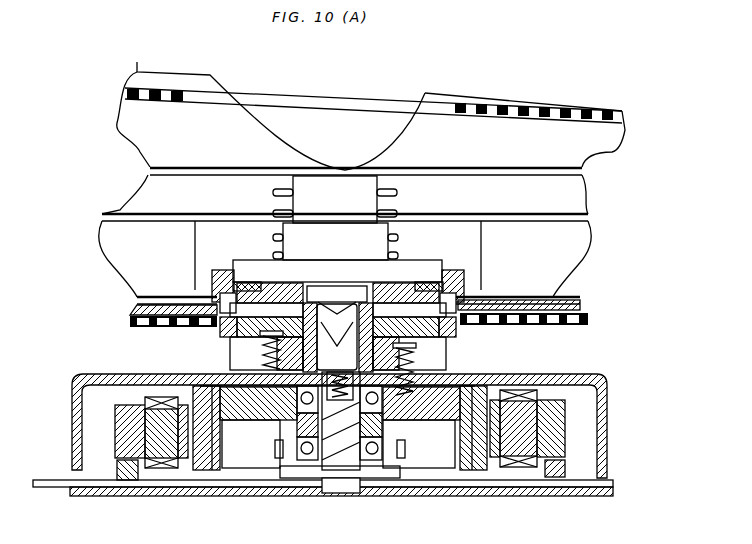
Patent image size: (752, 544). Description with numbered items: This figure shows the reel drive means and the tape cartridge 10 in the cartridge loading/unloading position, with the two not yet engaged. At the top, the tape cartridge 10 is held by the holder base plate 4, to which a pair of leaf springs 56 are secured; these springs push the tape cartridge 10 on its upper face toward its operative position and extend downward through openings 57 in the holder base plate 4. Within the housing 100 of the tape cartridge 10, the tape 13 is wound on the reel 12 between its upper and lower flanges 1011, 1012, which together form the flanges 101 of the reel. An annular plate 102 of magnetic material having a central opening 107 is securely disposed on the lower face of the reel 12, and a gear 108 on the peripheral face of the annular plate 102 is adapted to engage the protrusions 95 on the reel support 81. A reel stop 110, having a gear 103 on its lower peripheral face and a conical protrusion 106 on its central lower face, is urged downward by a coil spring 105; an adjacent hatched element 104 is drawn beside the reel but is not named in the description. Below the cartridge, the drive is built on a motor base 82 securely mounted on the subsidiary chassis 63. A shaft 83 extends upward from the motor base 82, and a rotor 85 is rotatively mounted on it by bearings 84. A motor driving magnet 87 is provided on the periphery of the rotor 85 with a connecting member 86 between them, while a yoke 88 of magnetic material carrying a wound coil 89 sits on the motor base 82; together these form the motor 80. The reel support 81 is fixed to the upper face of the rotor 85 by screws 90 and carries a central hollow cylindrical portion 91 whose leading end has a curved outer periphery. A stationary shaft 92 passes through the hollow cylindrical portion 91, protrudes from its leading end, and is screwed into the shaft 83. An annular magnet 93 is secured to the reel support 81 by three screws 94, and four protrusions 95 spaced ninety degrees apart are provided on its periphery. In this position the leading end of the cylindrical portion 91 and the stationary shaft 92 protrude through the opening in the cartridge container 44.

The holder base plate 4 is at (173, 102).
The tape cartridge 10 is at (527, 195).
The reel 12 is at (193, 232).
The tape 13 is at (175, 273).
The cartridge container 44 is at (150, 330).
The leaf spring 56 is at (442, 93).
The opening 57 is at (310, 101).
The subsidiary chassis 63 is at (147, 490).
The motor housing 80 is at (610, 400).
The reel support 81 is at (457, 365).
The motor base 82 is at (347, 497).
The shaft 83 is at (347, 453).
The bearings 84 is at (307, 448).
The rotor 85 is at (253, 415).
The connecting member 86 is at (215, 470).
The motor driving magnet 87 is at (202, 468).
The yoke 88 is at (180, 450).
The coil 89 is at (143, 400).
The screws 90 is at (411, 368).
The hollow cylindrical portion 91 is at (337, 352).
The stationary shaft 92 is at (327, 303).
The annular magnet 93 is at (293, 352).
The screws 94 is at (232, 350).
The protrusions 95 is at (215, 328).
The housing 100 is at (480, 167).
The flanges 101 is at (341, 256).
The upper flange 1011 is at (117, 218).
The lower flange 1012 is at (137, 297).
The annular plate 102 is at (292, 278).
The gear 103 is at (247, 281).
The hatched block 104 is at (213, 272).
The coil spring 105 is at (397, 198).
The conical protrusion 106 is at (337, 303).
The central opening 107 is at (307, 278).
The gear 108 is at (215, 297).
The reel stop 110 is at (313, 232).